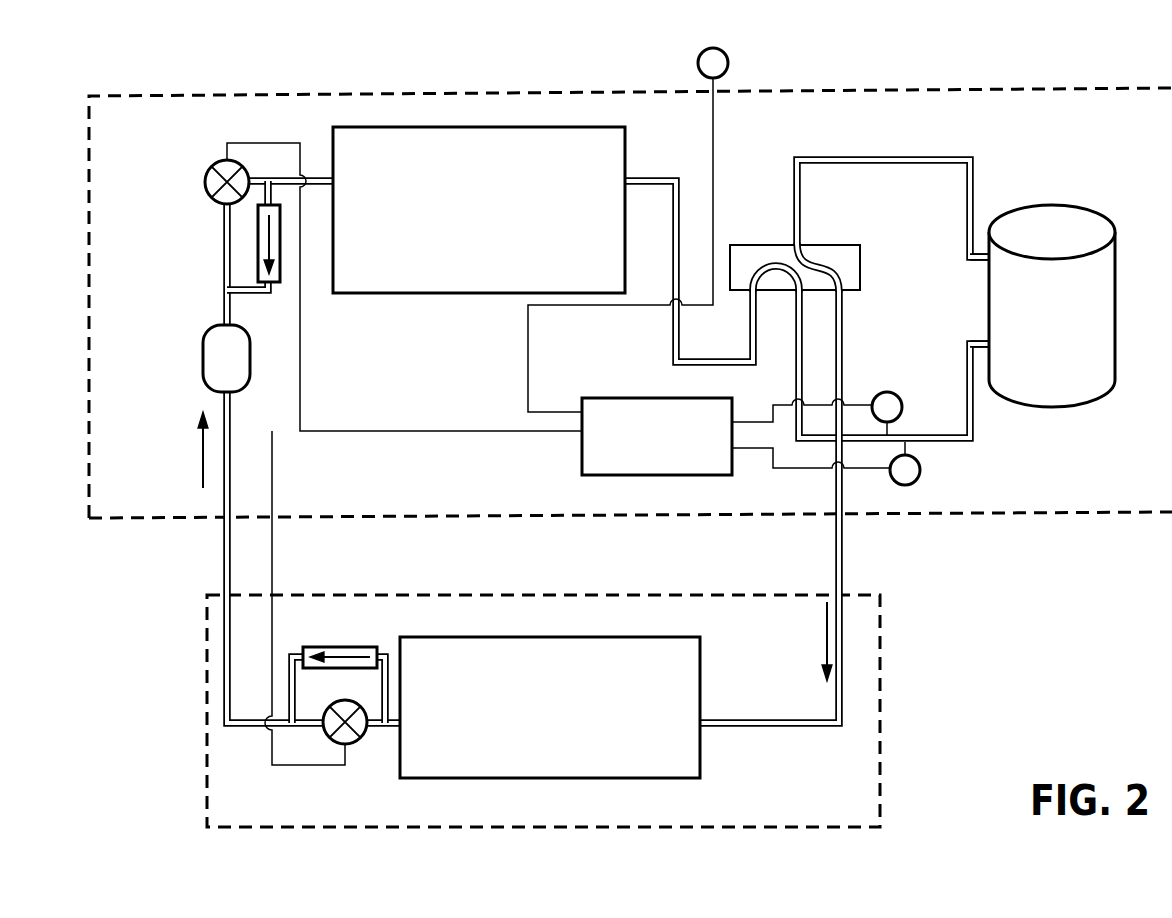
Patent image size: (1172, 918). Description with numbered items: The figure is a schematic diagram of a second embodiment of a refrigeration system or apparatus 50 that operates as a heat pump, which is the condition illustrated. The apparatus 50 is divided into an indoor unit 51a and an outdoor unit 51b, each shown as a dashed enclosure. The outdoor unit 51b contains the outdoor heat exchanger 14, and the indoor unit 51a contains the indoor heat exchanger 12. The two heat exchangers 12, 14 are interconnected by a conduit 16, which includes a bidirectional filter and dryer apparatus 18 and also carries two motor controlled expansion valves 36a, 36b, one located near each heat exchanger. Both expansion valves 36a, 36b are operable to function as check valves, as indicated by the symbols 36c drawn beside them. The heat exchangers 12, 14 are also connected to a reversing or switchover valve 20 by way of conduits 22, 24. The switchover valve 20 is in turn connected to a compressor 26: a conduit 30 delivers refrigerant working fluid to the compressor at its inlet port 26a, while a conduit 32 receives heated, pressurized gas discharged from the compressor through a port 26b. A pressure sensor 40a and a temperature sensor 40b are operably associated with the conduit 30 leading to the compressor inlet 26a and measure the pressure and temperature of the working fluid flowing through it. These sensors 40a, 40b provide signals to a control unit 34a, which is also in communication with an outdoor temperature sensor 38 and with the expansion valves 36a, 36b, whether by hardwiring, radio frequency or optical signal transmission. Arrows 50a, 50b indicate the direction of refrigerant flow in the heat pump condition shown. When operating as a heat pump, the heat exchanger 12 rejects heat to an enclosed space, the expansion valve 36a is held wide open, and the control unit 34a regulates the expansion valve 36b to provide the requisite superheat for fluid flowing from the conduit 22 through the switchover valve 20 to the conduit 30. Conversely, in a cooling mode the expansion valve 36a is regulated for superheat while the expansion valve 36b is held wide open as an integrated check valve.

The heat exchanger 12 is at (512, 637).
The heat exchanger 14 is at (445, 296).
The conduit 16 is at (226, 556).
The bidirectional filter and dryer apparatus 18 is at (203, 352).
The reversing valve 20 is at (832, 245).
The conduit 22 is at (663, 177).
The conduit 24 is at (768, 728).
The compressor 26 is at (1060, 207).
The inlet port 26a is at (990, 340).
The port 26b is at (978, 262).
The conduit 30 is at (977, 412).
The conduit 32 is at (904, 158).
The control unit 34a is at (624, 398).
The motor controlled expansion valve 36a is at (353, 745).
The motor controlled expansion valve 36b is at (211, 168).
The check valve symbol 36c is at (283, 264).
The outdoor temperature sensor 38 is at (724, 53).
The pressure sensor 40a is at (920, 481).
The temperature sensor 40b is at (922, 367).
The apparatus 50 is at (996, 72).
The flow direction arrow 50a is at (826, 632).
The flow direction arrow 50b is at (203, 458).
The indoor unit 51a is at (523, 828).
The outdoor unit 51b is at (418, 88).